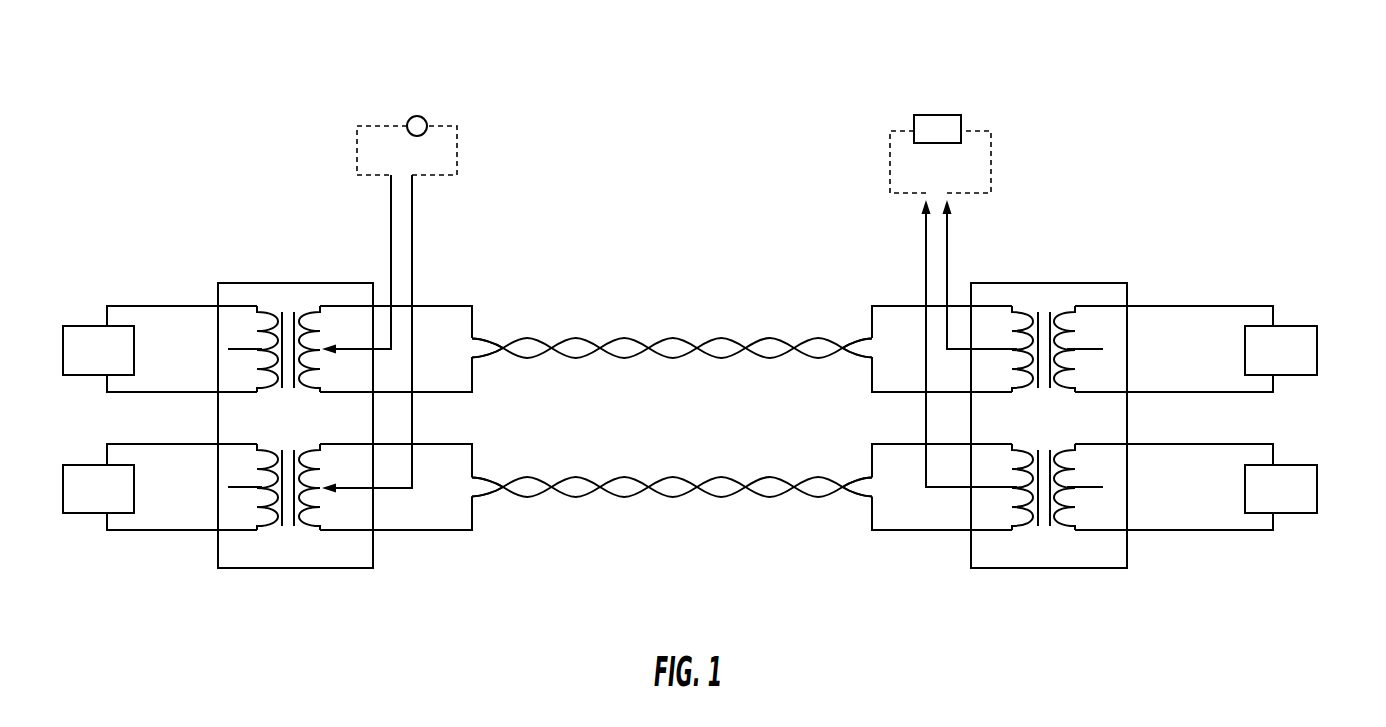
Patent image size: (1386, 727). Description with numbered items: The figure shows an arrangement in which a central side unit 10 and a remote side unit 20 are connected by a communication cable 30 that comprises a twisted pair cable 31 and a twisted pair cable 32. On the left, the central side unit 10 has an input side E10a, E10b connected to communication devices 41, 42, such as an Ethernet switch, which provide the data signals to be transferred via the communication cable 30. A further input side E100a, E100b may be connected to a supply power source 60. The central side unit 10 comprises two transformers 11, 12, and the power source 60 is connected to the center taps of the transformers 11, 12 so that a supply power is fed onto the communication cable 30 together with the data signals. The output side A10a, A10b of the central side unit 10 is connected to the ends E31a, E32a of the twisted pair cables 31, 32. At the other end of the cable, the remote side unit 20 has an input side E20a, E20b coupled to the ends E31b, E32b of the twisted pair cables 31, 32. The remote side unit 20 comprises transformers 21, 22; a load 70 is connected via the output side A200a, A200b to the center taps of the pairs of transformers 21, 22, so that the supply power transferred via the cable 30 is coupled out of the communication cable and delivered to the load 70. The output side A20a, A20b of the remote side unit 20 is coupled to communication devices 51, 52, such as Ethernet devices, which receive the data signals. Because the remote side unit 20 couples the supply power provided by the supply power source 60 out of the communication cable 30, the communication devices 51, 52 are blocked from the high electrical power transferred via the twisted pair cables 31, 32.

The central side unit 10 is at (316, 264).
The transformer 11 is at (267, 290).
The transformer 12 is at (292, 565).
The remote side unit 20 is at (1106, 250).
The transformer 21 is at (1044, 300).
The transformer 22 is at (1045, 535).
The communication cable 30 is at (672, 372).
The twisted pair cable 31 is at (680, 330).
The twisted pair cable 32 is at (678, 465).
The communication device 41 is at (75, 304).
The communication device 42 is at (86, 528).
The communication device 51 is at (1284, 312).
The communication device 52 is at (1324, 448).
The supply power source 60 is at (419, 104).
The load 70 is at (943, 115).
The input side E10a is at (126, 292).
The input side E10b is at (116, 435).
The output side A10a is at (472, 292).
The output side A10b is at (476, 545).
The input side E100a is at (417, 178).
The input side E100b is at (382, 178).
The end E31a is at (484, 321).
The end E31b is at (860, 372).
The end E32a is at (498, 437).
The end E32b is at (859, 509).
The input side E20a is at (876, 290).
The input side E20b is at (875, 550).
The output side A20a is at (1215, 282).
The output side A20b is at (1224, 550).
The output side A200a is at (949, 195).
The output side A200b is at (924, 197).